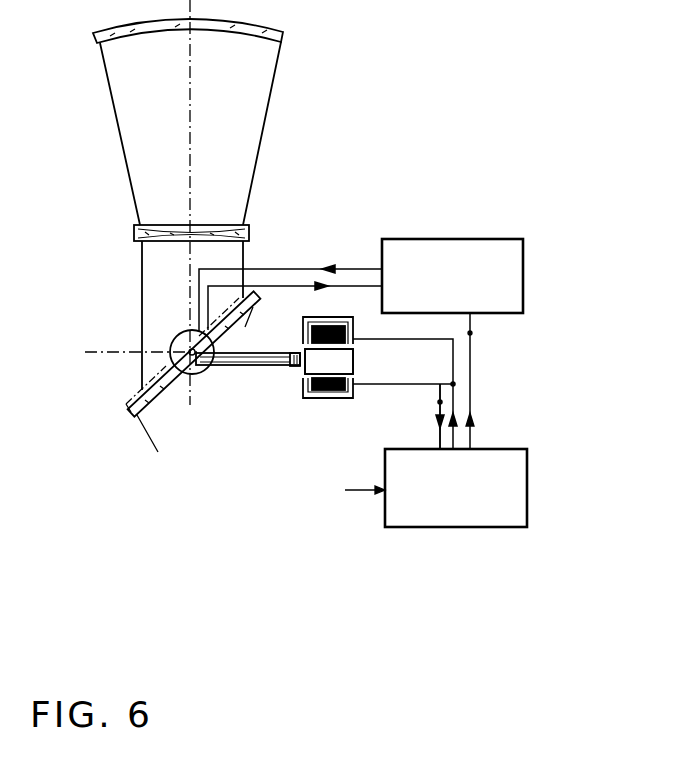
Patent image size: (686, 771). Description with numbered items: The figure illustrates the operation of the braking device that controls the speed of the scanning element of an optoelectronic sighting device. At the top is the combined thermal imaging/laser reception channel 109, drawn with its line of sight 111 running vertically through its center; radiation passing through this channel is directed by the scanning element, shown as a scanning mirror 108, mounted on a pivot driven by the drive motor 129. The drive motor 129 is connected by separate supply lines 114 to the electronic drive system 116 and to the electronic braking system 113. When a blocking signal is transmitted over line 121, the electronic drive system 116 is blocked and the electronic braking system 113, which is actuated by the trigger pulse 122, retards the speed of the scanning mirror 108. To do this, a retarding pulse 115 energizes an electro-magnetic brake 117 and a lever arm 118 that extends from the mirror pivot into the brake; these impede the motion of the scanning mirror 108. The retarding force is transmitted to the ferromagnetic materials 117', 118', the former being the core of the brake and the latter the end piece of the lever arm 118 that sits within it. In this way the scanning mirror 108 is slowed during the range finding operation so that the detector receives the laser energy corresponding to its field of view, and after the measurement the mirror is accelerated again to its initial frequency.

The scanning mirror 108 is at (138, 413).
The combined thermal imaging/laser reception channel 109 is at (88, 28).
The line of sight 111 is at (190, 138).
The electronic braking system 113 is at (523, 447).
The supply lines 114 is at (364, 286).
The retarding pulse 115 is at (453, 385).
The electronic drive system 116 is at (514, 277).
The electro-magnetic brake 117 is at (319, 434).
The ferromagnetic material 117' is at (357, 362).
The lever arm 118 is at (248, 452).
The ferromagnetic material 118' is at (284, 339).
The line 121 is at (470, 333).
The trigger pulse 122 is at (365, 519).
The drive motor 129 is at (190, 375).